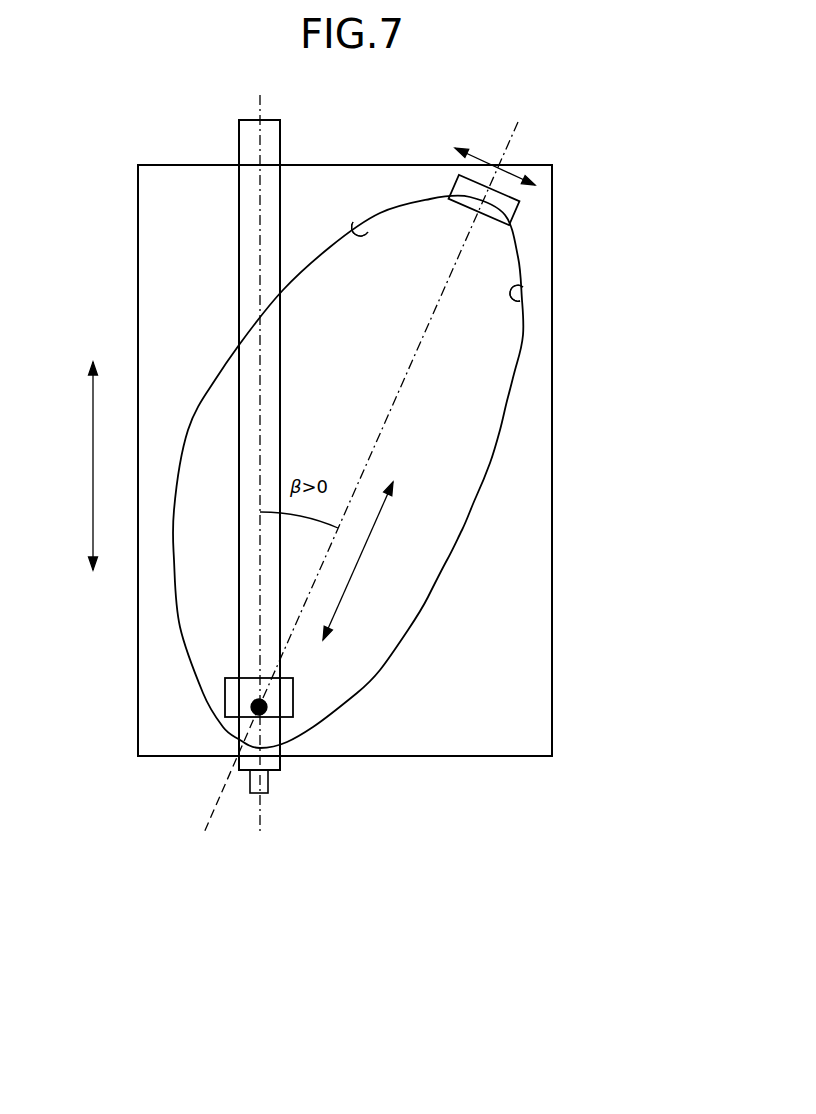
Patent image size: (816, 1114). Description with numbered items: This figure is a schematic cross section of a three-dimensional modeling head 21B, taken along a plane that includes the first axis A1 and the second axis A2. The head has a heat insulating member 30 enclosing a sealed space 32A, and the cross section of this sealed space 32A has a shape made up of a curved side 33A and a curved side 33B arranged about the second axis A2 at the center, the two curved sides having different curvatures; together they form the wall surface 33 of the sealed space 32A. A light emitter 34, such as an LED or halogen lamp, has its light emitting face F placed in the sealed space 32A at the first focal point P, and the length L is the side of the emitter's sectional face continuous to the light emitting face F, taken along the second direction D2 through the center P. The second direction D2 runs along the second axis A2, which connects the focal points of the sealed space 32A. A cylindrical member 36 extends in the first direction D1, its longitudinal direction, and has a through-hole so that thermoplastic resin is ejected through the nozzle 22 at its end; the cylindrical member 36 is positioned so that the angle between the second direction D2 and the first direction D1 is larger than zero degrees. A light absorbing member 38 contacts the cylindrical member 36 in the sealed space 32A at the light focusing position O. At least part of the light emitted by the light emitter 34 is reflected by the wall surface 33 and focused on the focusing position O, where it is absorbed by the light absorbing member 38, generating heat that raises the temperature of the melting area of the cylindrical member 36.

The three-dimensional modeling head 21B is at (697, 136).
The nozzle 22 is at (268, 782).
The heat insulating member 30 is at (552, 540).
The sealed space 32A is at (457, 471).
The wall surface 33 is at (437, 261).
The curved side 33A is at (353, 222).
The curved side 33B is at (523, 287).
The light emitter 34 is at (517, 217).
The cylindrical member 36 is at (239, 299).
The light absorbing member 38 is at (225, 692).
The first axis A1 is at (262, 811).
The second axis A2 is at (203, 835).
The first direction D1 is at (93, 476).
The second direction D2 is at (360, 558).
The light emitting face F is at (450, 206).
The side length of light emitter sectional face L is at (515, 162).
The light focusing position O is at (251, 710).
The first focal point P is at (513, 237).